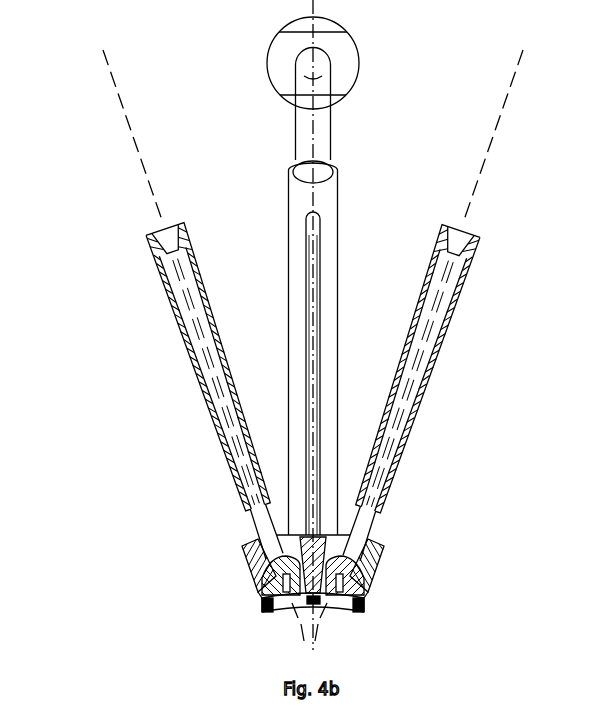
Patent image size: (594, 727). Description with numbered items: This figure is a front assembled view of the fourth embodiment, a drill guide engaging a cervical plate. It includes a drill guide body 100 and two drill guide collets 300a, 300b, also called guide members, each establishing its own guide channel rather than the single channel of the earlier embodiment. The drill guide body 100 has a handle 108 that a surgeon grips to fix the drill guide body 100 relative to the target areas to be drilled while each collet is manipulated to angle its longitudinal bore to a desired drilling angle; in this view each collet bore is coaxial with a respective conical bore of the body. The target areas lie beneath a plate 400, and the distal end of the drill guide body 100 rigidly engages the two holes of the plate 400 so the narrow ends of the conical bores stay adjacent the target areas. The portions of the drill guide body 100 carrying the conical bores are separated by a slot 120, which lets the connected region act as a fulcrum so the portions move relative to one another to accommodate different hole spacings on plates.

The handle 108 is at (358, 43).
The slot 120 is at (315, 426).
The drill guide collet 300a is at (180, 337).
The drill guide collet 300b is at (435, 373).
The drill guide body 100 is at (242, 563).
The plate 400 is at (361, 597).